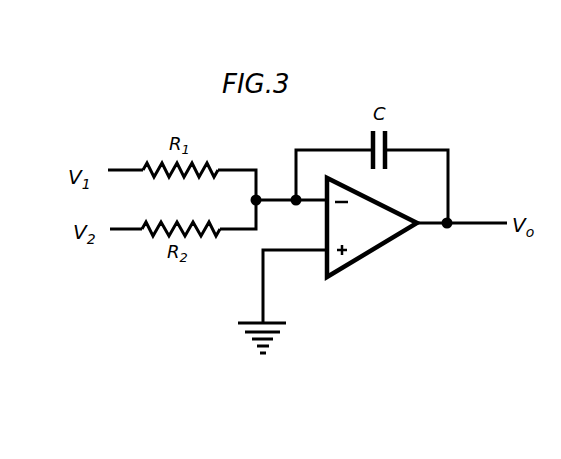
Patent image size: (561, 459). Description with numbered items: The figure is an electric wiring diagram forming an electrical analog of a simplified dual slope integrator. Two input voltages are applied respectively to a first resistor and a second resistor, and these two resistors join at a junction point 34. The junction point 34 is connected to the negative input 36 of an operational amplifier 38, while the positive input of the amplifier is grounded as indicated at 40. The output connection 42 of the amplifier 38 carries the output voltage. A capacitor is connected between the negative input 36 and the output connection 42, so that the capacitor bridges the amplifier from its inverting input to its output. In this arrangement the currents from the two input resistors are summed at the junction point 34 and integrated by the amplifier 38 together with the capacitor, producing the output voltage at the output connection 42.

The junction point 34 is at (259, 196).
The negative input 36 is at (315, 199).
The operational amplifier 38 is at (379, 237).
The ground connection of positive input 40 is at (294, 252).
The output connection 42 is at (428, 217).